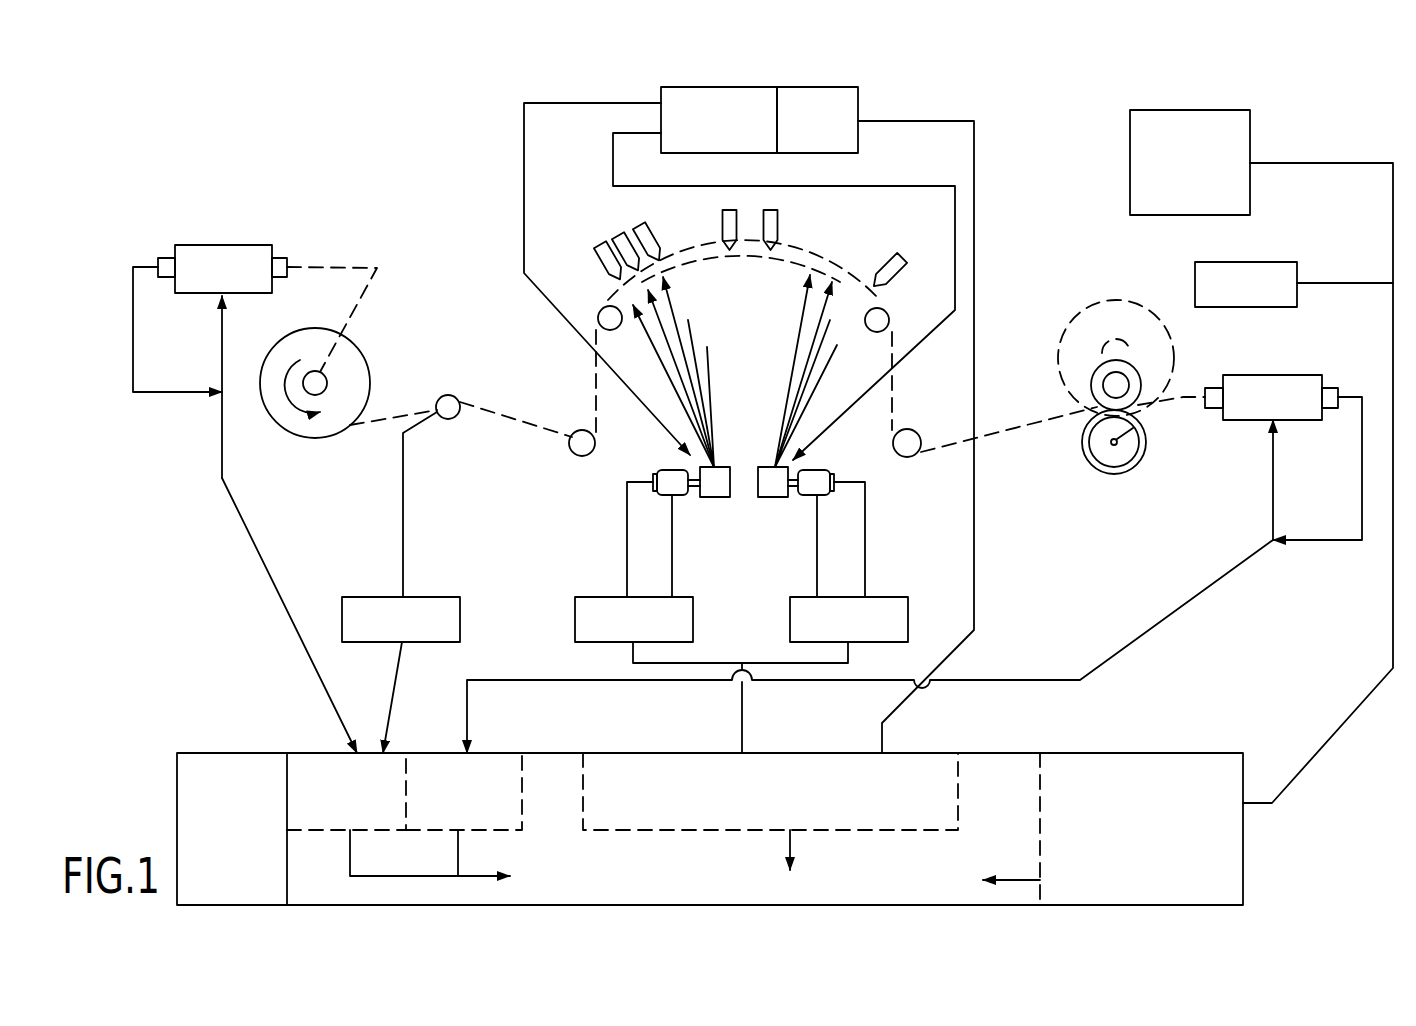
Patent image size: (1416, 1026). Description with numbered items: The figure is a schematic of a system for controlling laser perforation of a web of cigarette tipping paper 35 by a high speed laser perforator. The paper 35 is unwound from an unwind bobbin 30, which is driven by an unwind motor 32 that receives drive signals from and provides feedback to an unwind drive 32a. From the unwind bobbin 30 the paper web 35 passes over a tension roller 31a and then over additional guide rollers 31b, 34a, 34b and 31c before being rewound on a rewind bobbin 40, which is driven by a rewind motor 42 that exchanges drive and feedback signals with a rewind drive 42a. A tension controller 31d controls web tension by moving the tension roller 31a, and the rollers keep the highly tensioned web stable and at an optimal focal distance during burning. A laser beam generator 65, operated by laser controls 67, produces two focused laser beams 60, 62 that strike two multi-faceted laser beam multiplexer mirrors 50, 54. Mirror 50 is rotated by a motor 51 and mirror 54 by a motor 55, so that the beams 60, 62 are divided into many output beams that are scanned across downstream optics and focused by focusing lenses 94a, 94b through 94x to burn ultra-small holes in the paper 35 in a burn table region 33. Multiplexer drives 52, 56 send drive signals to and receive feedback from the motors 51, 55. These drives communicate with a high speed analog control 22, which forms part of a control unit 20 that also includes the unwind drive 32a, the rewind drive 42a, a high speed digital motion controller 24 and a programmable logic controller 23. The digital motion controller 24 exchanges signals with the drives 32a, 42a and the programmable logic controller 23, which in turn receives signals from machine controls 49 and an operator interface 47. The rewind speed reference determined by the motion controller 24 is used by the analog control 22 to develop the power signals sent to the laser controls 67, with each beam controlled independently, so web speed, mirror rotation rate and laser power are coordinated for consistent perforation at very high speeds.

The control unit 20 is at (1272, 845).
The high speed analog control 22 is at (708, 819).
The programmable logic controller 23 is at (1185, 891).
The high speed digital motion controller 24 is at (307, 896).
The unwind bobbin 30 is at (353, 342).
The tension roller 31a is at (445, 396).
The guide roller 31b is at (575, 430).
The guide roller 31c is at (908, 458).
The tension controller 31d is at (430, 597).
The unwind motor 32 is at (252, 245).
The unwind drive 32a is at (305, 760).
The burn table region 33 is at (757, 258).
The guide roller 34a is at (602, 311).
The guide roller 34b is at (888, 312).
The paper web 35 is at (520, 428).
The rewind bobbin 40 is at (1140, 462).
The rewind motor 42 is at (1277, 375).
The rewind drive 42a is at (497, 753).
The operator interface 47 is at (1190, 110).
The machine controls 49 is at (1255, 262).
The laser beam multiplexer mirror 50 is at (723, 497).
The motor 51 is at (655, 475).
The multiplexer drive 52 is at (593, 597).
The laser beam multiplexer mirror 54 is at (773, 493).
The motor 55 is at (832, 473).
The multiplexer drive 56 is at (790, 617).
The laser beam 60 is at (568, 327).
The laser beam 62 is at (908, 185).
The laser beam generator 65 is at (715, 87).
The laser controls 67 is at (805, 87).
The focusing lens 94a is at (655, 233).
The focusing lens 94b is at (730, 247).
The focusing lens 94x is at (778, 222).